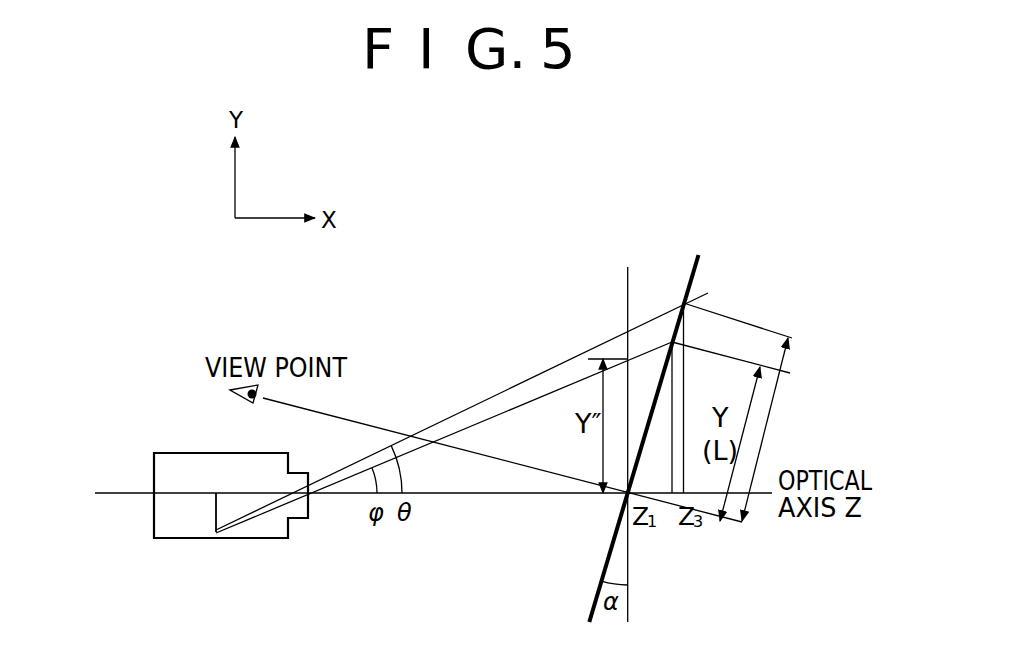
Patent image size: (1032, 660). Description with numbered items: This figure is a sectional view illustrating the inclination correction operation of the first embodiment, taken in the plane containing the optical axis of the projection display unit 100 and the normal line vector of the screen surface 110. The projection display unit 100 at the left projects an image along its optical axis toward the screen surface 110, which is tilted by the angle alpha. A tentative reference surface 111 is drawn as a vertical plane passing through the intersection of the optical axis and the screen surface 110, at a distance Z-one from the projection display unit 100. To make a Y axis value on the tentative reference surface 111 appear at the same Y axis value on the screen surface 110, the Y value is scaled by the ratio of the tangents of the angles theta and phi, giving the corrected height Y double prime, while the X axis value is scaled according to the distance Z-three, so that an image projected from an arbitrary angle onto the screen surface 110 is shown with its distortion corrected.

The projection display unit 100 is at (193, 453).
The screen surface 110 is at (686, 299).
The tentative reference surface 111 is at (627, 302).